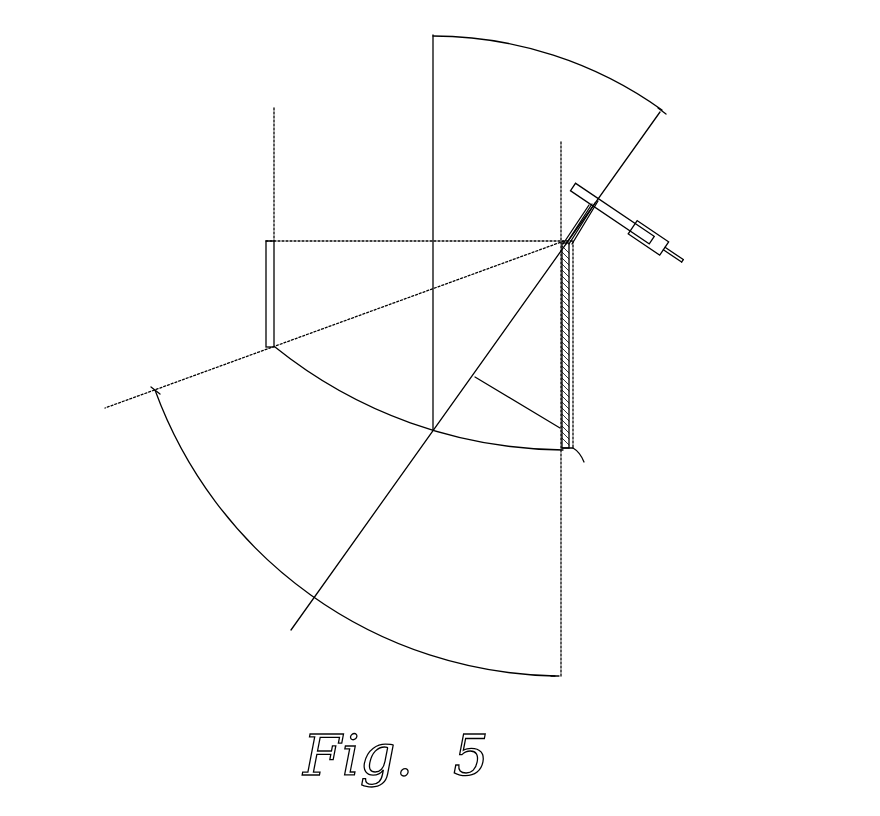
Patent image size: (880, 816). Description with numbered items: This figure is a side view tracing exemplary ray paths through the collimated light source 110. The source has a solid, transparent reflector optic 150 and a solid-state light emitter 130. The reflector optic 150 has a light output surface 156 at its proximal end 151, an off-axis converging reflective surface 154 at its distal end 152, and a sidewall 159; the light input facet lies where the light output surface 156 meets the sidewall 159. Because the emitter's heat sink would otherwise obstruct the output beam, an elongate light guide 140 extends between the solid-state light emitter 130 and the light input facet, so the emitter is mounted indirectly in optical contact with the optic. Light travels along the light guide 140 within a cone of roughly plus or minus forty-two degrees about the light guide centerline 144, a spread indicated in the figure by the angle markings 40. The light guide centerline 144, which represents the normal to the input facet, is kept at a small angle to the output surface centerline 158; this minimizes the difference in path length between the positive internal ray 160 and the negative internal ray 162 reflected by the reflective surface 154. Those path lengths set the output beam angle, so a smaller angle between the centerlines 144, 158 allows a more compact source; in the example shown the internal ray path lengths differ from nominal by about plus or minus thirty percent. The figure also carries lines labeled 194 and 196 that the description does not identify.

The rotation angle 40 is at (408, 353).
The collimated light source 110 is at (237, 230).
The solid-state light emitter 130 is at (648, 213).
The elongate light guide 140 is at (566, 237).
The light guide centerline 144 is at (575, 427).
The reflector optic 150 is at (320, 290).
The proximal end 151 is at (266, 256).
The distal end 152 is at (574, 449).
The off-axis converging reflective surface 154 is at (328, 387).
The light output surface 156 is at (362, 240).
The output surface centerline 158 is at (430, 170).
The sidewall 159 is at (575, 378).
The positive internal ray 160 is at (320, 328).
The negative internal ray 162 is at (673, 287).
The reference line 194 is at (273, 173).
The reference line 196 is at (562, 152).